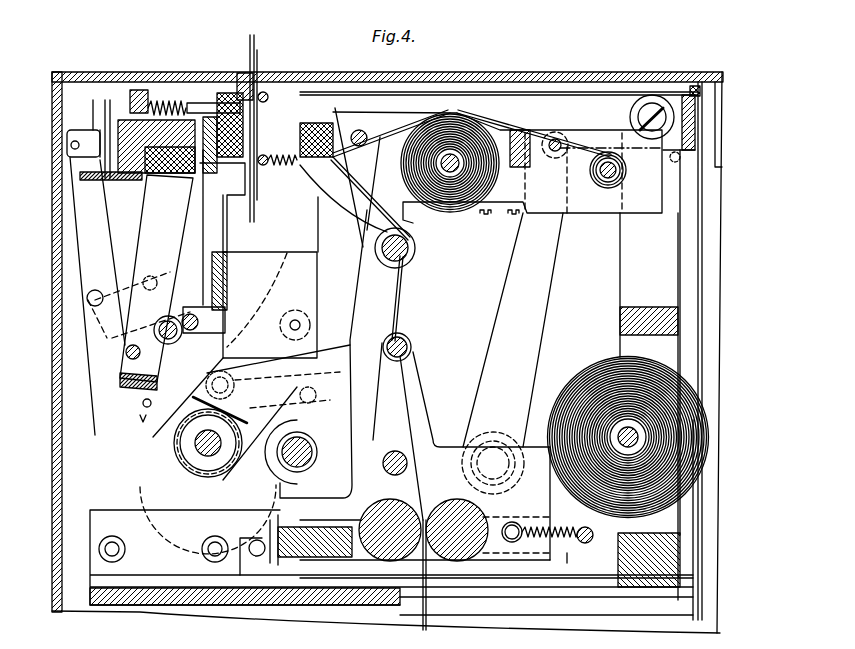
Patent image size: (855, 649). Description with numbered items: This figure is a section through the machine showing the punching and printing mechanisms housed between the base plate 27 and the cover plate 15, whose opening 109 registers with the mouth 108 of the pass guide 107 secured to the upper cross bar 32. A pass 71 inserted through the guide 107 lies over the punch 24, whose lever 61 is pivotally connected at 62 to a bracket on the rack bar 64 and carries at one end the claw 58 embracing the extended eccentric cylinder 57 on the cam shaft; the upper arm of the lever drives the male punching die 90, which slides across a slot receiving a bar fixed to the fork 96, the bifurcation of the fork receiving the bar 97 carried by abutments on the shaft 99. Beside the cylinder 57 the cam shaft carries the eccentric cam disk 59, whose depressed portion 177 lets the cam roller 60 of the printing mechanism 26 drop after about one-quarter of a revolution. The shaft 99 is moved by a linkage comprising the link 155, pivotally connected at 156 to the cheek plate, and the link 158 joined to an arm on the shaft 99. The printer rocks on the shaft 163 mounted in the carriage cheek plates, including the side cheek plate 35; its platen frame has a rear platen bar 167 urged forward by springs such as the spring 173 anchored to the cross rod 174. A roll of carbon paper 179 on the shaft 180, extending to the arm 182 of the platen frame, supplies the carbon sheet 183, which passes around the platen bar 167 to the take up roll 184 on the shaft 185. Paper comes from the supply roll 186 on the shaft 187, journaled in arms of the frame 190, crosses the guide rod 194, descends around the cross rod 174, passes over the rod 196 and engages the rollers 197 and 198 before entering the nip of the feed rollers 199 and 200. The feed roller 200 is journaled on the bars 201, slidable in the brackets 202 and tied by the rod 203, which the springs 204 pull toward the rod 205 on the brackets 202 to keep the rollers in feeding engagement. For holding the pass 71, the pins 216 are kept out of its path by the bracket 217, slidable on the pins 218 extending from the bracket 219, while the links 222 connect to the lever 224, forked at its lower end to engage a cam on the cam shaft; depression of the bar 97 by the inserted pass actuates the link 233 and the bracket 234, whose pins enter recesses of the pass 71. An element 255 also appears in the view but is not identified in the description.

The cover plate 15 is at (485, 72).
The punch 24 is at (322, 252).
The printing mechanism 26 is at (360, 307).
The base plate 27 is at (365, 615).
The upper cross bar 32 is at (240, 83).
The side cheek plate 35 is at (530, 330).
The extended eccentric cylinder 57 is at (195, 450).
The claw 58 is at (175, 445).
The eccentric cam disk 59 is at (285, 410).
The cam roller 60 is at (232, 380).
The lever 61 is at (305, 372).
The pivotal connection 62 is at (302, 322).
The rack bar 64 is at (230, 265).
The pass 71 is at (258, 50).
The male punching die 90 is at (322, 226).
The fork 96 is at (197, 307).
The bar 97 is at (200, 322).
The shaft 99 is at (168, 340).
The pass guide 107 is at (262, 83).
The mouth 108 is at (250, 60).
The opening 109 is at (260, 56).
The link 155 is at (92, 306).
The pivotal connection 156 is at (143, 406).
The link 158 is at (150, 276).
The shaft 163 is at (300, 452).
The platen bar 167 is at (305, 123).
The spring 173 is at (318, 183).
The cross rod 174 is at (264, 166).
The depressed portion 177 is at (265, 455).
The roll of carbon paper 179 is at (464, 212).
The shaft 180 is at (462, 168).
The arm 182 is at (410, 222).
The carbon sheet 183 is at (383, 188).
The take up roll 184 is at (600, 185).
The shaft 185 is at (614, 176).
The supply roll 186 is at (598, 357).
The shaft 187 is at (622, 432).
The frame 190 is at (680, 343).
The guide rod 194 is at (263, 103).
The rod 196 is at (405, 255).
The roller 197 is at (405, 337).
The roller 198 is at (392, 450).
The feed roller 199 is at (400, 500).
The feed roller 200 is at (457, 500).
The bars 201 is at (568, 563).
The brackets 202 is at (506, 463).
The rod 203 is at (587, 543).
The springs 204 is at (520, 555).
The rod 205 is at (512, 522).
The pins 216 is at (207, 105).
The bracket 217 is at (140, 90).
The pins 218 is at (190, 173).
The bracket 219 is at (205, 190).
The links 222 is at (90, 130).
The lever 224 is at (90, 218).
The link 233 is at (165, 226).
The bracket 234 is at (170, 100).
The pin 255 is at (126, 354).